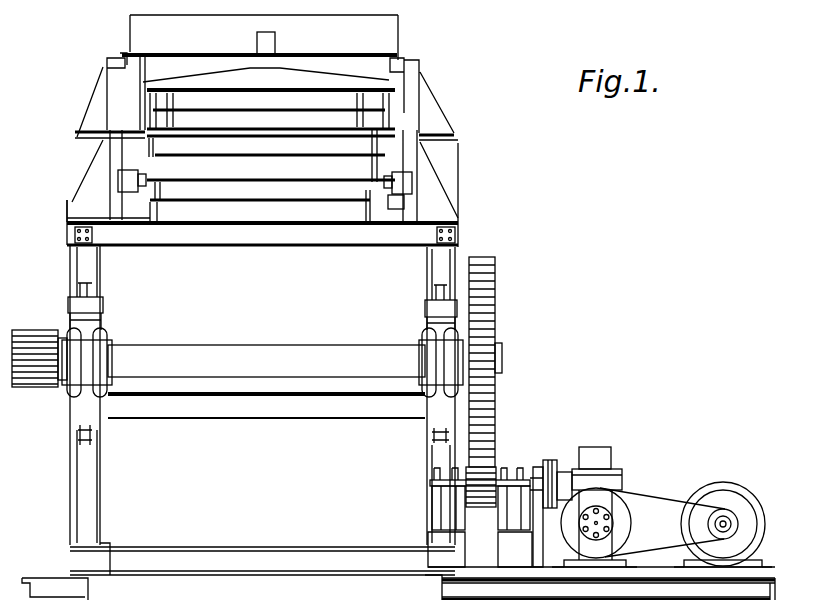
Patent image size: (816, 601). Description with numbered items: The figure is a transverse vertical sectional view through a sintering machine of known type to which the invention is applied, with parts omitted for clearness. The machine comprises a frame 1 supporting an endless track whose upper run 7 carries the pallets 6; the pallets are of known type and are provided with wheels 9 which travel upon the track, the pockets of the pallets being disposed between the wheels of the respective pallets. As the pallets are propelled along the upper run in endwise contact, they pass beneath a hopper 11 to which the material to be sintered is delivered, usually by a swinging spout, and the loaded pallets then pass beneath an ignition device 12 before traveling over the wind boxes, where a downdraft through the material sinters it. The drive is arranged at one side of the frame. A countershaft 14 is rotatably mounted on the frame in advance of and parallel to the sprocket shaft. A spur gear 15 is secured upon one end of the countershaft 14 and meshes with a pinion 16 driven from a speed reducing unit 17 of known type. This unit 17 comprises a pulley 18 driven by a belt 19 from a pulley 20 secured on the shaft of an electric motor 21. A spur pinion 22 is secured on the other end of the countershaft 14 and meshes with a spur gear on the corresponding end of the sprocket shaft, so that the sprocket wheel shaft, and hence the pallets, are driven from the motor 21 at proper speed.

The frame 1 is at (70, 487).
The pallets 6 is at (229, 158).
The upper run 7 is at (400, 198).
The wheels 9 is at (412, 174).
The hopper 11 is at (419, 63).
The ignition device 12 is at (304, 83).
The countershaft 14 is at (248, 352).
The spur gear 15 is at (497, 307).
The pinion 16 is at (480, 486).
The speed reducing unit 17 is at (594, 448).
The pulley 18 is at (622, 523).
The belt 19 is at (630, 490).
The pulley 20 is at (708, 522).
The electric motor 21 is at (722, 482).
The spur pinion 22 is at (36, 386).